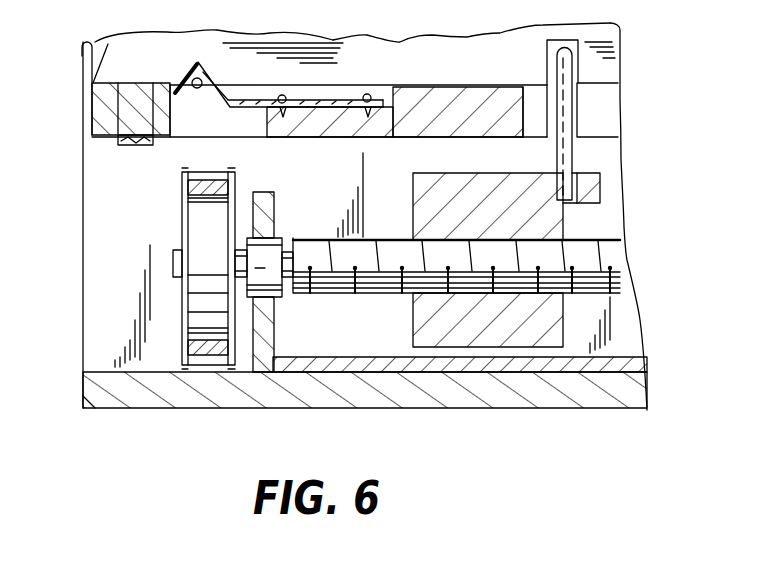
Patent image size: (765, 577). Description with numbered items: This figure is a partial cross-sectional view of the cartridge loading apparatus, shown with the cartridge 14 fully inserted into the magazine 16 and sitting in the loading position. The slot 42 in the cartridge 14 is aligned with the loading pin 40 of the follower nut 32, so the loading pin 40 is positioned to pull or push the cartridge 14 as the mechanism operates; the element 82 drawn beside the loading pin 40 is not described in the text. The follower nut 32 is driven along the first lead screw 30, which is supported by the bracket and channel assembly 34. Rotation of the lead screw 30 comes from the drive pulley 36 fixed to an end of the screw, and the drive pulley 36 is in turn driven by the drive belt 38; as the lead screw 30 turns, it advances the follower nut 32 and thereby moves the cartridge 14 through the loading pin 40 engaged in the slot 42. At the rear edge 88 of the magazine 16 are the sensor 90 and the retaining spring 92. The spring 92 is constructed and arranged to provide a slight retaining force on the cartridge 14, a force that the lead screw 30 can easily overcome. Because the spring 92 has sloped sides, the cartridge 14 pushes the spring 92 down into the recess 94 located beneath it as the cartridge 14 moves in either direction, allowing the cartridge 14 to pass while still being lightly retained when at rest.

The cartridge 14 is at (458, 73).
The magazine 16 is at (97, 42).
The first lead screw 30 is at (364, 240).
The follower nut 32 is at (414, 193).
The bracket and channel assembly 34 is at (273, 191).
The drive pulley 36 is at (177, 240).
The drive belt 38 is at (181, 207).
The loading pin 40 is at (556, 63).
The slot 42 is at (610, 23).
The guide slot 82 is at (593, 118).
The rear edge 88 is at (81, 104).
The sensor 90 is at (93, 152).
The retaining spring 92 is at (178, 92).
The recess 94 is at (192, 132).